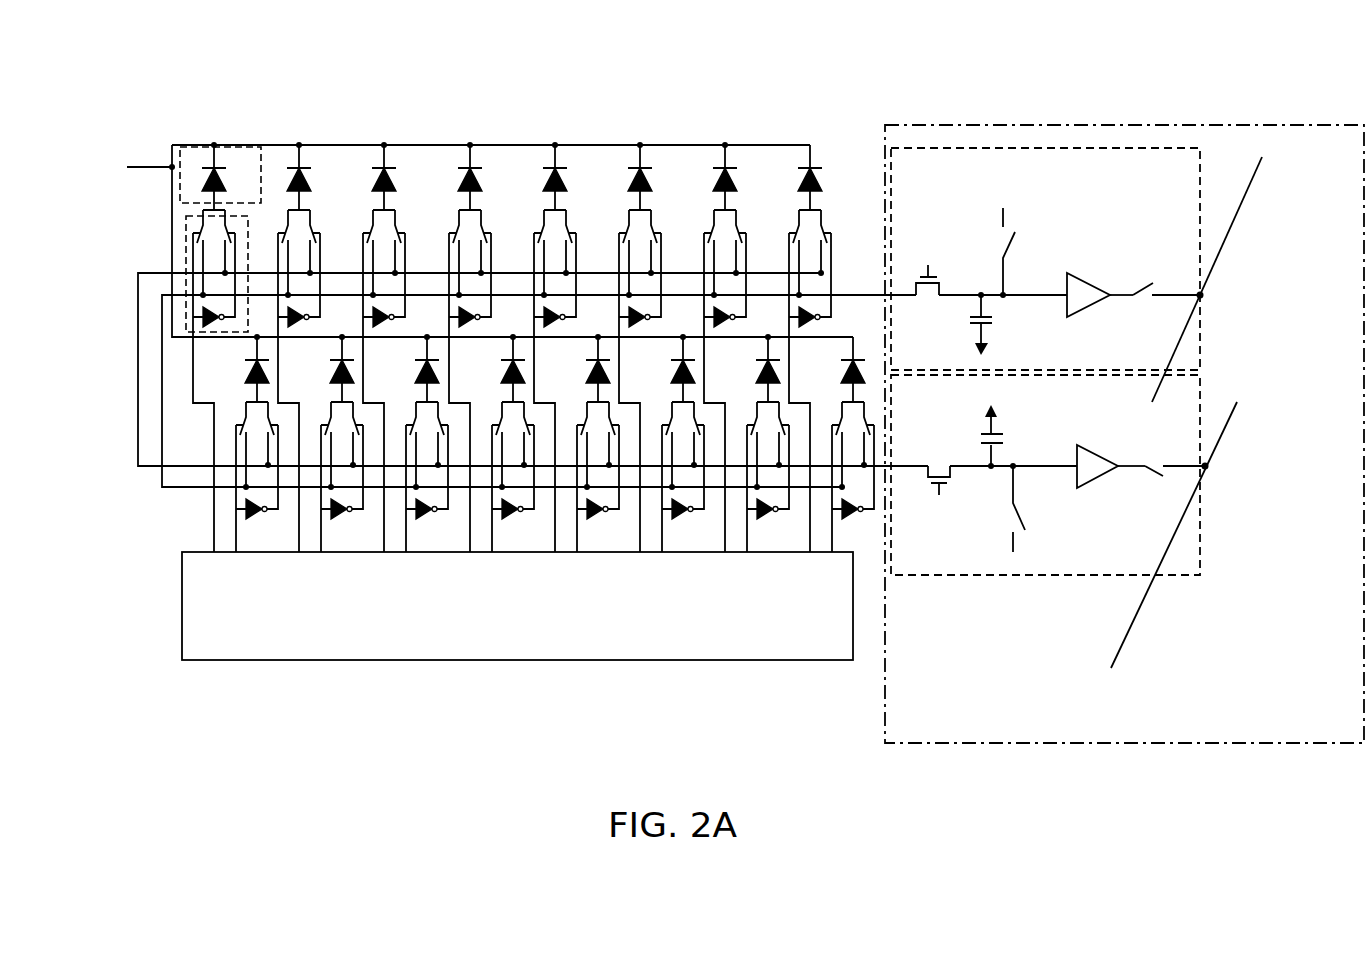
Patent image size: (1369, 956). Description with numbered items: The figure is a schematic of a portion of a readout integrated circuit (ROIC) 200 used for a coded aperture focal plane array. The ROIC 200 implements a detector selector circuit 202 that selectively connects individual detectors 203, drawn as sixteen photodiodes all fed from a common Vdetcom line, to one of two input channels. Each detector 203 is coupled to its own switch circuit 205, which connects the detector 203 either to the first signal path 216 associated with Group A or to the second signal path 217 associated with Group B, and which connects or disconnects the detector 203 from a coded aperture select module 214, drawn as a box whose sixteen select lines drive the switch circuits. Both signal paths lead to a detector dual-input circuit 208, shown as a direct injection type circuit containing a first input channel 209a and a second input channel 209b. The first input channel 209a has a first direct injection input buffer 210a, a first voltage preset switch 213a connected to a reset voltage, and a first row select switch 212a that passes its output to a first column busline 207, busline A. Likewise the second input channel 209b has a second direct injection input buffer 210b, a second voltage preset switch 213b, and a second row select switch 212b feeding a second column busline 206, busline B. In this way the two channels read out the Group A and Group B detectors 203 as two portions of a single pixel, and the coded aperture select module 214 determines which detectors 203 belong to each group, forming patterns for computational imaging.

The readout integrated circuit (ROIC) 200 is at (236, 107).
The detector selector circuit 202 is at (339, 144).
The detector 203 is at (166, 186).
The switch circuit 205 is at (166, 233).
The second column busline (busline B) 206 is at (1218, 250).
The first column busline (busline A) 207 is at (1200, 478).
The detector dual-input circuit 208 is at (1019, 123).
The first input channel 209a is at (970, 591).
The second input channel 209b is at (1152, 142).
The first direct injection input buffer 210a is at (938, 463).
The second direct injection input buffer 210b is at (932, 292).
The first row select switch 212a is at (1147, 477).
The second row select switch 212b is at (1142, 283).
The first voltage preset switch 213a is at (1013, 500).
The second voltage preset switch 213b is at (1003, 270).
The coded aperture select module 214 is at (747, 662).
The first signal path / first detector group (Group A) 216 is at (137, 317).
The second signal path / second detector group (Group B) 217 is at (161, 478).